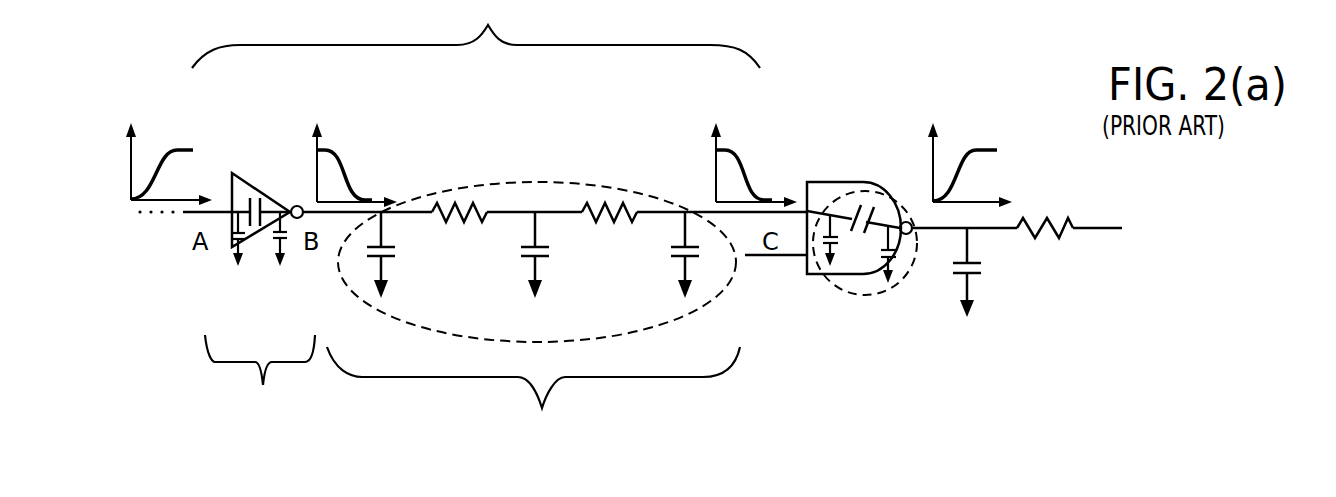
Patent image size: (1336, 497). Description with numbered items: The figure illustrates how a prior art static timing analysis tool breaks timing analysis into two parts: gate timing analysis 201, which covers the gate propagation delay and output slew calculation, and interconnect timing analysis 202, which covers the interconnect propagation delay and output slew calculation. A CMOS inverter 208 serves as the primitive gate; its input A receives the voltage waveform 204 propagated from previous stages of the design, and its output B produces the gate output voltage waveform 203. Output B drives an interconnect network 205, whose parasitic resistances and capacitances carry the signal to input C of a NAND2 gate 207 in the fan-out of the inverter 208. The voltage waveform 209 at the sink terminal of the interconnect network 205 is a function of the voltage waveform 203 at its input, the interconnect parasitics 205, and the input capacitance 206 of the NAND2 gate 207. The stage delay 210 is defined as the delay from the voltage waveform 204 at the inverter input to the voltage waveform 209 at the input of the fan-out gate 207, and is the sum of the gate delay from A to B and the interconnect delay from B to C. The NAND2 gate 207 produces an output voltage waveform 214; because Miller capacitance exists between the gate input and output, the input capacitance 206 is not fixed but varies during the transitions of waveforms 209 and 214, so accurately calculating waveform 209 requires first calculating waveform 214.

The gate timing analysis 201 is at (260, 276).
The interconnect timing analysis 202 is at (555, 312).
The voltage waveform at output of gate 203 is at (348, 165).
The voltage waveform at input of CMOS gate 204 is at (182, 150).
The interconnect network 205 is at (713, 297).
The input capacitance 206 is at (862, 233).
The NAND2 gate 207 is at (838, 200).
The CMOS inverter 208 is at (258, 190).
The voltage waveform at input of gate 209 is at (748, 165).
The stage delay 210 is at (499, 221).
The voltage waveform at output of gate 214 is at (978, 150).